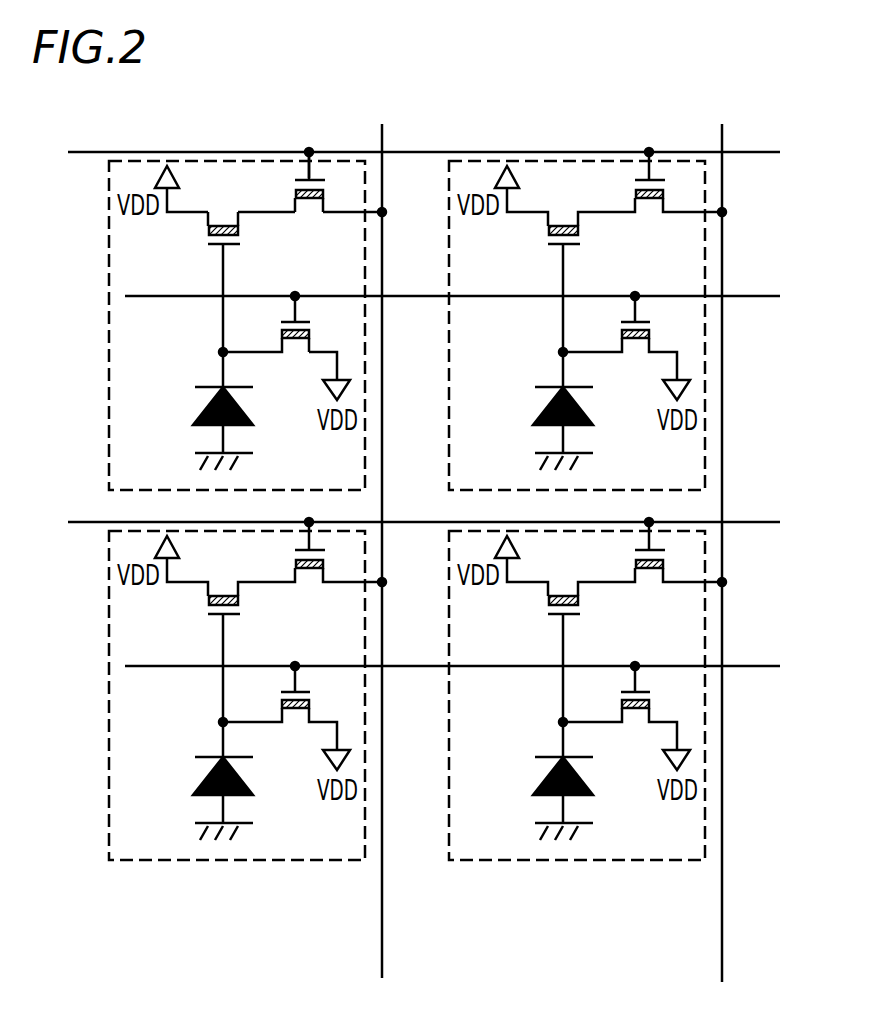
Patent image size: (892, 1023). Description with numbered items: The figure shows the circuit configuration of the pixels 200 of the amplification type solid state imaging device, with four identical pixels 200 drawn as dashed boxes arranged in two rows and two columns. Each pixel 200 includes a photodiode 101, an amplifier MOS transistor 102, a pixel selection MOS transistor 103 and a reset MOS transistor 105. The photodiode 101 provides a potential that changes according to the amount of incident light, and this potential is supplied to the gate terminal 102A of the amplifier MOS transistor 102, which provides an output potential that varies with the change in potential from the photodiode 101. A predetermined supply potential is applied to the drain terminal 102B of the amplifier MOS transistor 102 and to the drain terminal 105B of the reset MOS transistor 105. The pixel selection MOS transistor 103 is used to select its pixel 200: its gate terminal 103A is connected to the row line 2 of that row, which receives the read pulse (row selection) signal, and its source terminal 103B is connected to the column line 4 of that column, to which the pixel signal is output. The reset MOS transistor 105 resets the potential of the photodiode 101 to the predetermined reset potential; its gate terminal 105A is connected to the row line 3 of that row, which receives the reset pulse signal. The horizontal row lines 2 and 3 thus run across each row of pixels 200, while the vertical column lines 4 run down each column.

The row line 2 is at (90, 152).
The row line 3 is at (776, 289).
The column line 4 is at (381, 939).
The photodiode 101 is at (205, 410).
The amplifier MOS transistor 102 is at (225, 224).
The gate terminal of amplifier MOS transistor 102A is at (222, 273).
The drain terminal of amplifier MOS transistor 102B is at (206, 210).
The pixel selection MOS transistor 103 is at (303, 180).
The gate terminal of pixel selection MOS transistor 103A is at (315, 176).
The source terminal of pixel selection MOS transistor 103B is at (338, 214).
The reset MOS transistor 105 is at (300, 350).
The gate terminal of reset MOS transistor 105A is at (294, 314).
The drain terminal of reset MOS transistor 105B is at (320, 352).
The pixel 200 is at (109, 400).